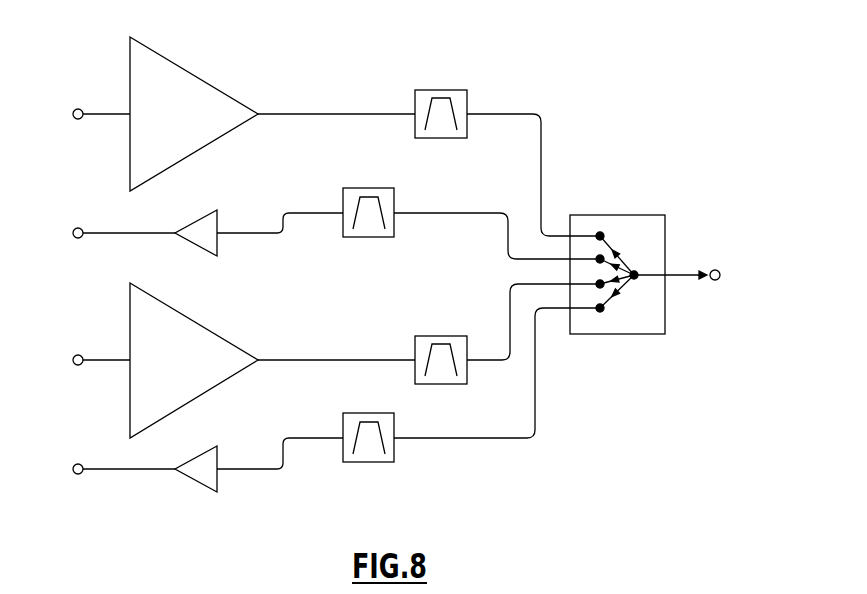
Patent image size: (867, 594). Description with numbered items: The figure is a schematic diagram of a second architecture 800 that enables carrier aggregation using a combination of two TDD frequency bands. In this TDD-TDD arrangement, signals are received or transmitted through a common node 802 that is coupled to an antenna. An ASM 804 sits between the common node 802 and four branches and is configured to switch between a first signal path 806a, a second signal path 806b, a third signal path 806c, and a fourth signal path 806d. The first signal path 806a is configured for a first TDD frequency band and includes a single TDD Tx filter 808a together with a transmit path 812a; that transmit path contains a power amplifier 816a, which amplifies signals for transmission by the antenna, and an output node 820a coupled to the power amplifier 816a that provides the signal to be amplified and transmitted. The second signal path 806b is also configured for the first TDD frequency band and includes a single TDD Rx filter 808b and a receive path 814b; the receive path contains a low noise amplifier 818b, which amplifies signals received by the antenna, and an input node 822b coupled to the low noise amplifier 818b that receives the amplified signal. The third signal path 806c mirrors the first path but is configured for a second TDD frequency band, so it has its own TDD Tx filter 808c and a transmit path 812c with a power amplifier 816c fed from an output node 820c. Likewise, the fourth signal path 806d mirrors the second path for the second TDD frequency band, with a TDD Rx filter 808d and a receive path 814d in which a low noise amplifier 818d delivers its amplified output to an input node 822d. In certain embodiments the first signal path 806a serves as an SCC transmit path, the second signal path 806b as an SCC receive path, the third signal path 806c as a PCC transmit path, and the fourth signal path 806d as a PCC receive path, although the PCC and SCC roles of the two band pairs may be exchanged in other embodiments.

The second architecture 800 is at (547, 78).
The common node 802 is at (716, 281).
The ASM 804 is at (645, 215).
The first signal path 806a is at (541, 136).
The second signal path 806b is at (508, 233).
The third signal path 806c is at (510, 324).
The fourth signal path 806d is at (535, 410).
The TDD Tx filter 808a is at (440, 90).
The TDD Rx filter 808b is at (356, 188).
The TDD Tx filter 808c is at (415, 342).
The TDD Rx filter 808d is at (356, 413).
The transmit path 812a is at (297, 113).
The transmit path 812c is at (305, 359).
The receive path 814b is at (283, 222).
The receive path 814d is at (280, 475).
The power amplifier 816a is at (205, 82).
The power amplifier 816c is at (198, 324).
The low noise amplifier 818b is at (217, 256).
The low noise amplifier 818d is at (217, 492).
The output node 820a is at (79, 108).
The output node 820c is at (79, 354).
The input node 822b is at (79, 227).
The input node 822d is at (79, 463).